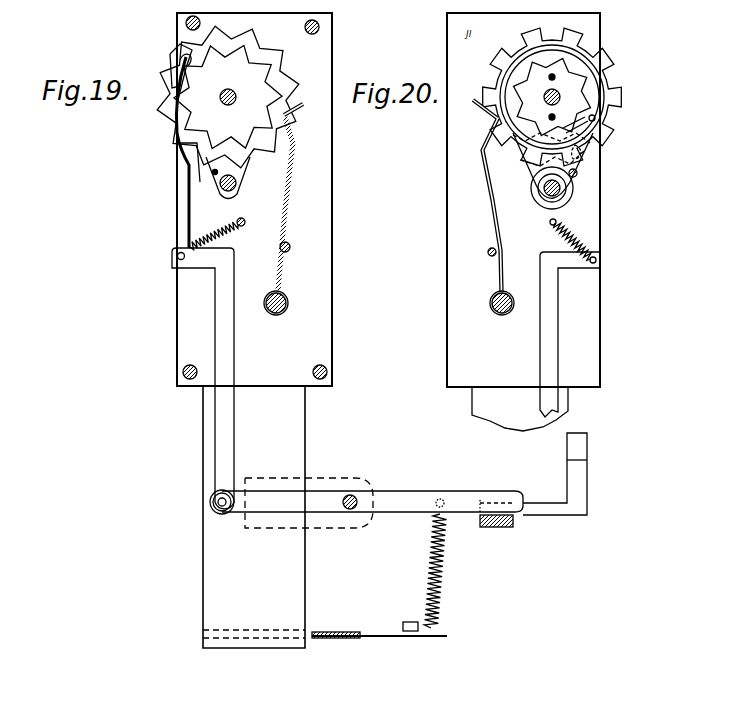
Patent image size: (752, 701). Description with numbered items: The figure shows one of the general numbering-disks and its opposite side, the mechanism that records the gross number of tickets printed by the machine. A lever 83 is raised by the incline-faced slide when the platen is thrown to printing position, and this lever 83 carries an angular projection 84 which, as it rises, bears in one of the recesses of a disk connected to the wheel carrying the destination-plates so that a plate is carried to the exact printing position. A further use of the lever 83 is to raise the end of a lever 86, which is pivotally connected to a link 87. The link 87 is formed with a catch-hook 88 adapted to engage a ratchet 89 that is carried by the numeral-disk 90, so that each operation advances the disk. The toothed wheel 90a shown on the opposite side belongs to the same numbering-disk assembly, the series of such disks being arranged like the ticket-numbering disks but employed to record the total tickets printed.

In FIG. 20, the lever 83 is at (510, 525).
In FIG. 20, the angular projection 84 is at (577, 452).
In FIG. 19, the lever 86 is at (366, 503).
In FIG. 19, the link 87 is at (217, 297).
In FIG. 20, the link 87 is at (590, 228).
In FIG. 19, the catch-hook 88 is at (178, 53).
In FIG. 19, the ratchet 89 is at (228, 96).
In FIG. 20, the ratchet 89 is at (552, 97).
In FIG. 19, the numeral-disk 90 is at (250, 38).
In FIG. 20, the toothed wheel 90a is at (603, 62).